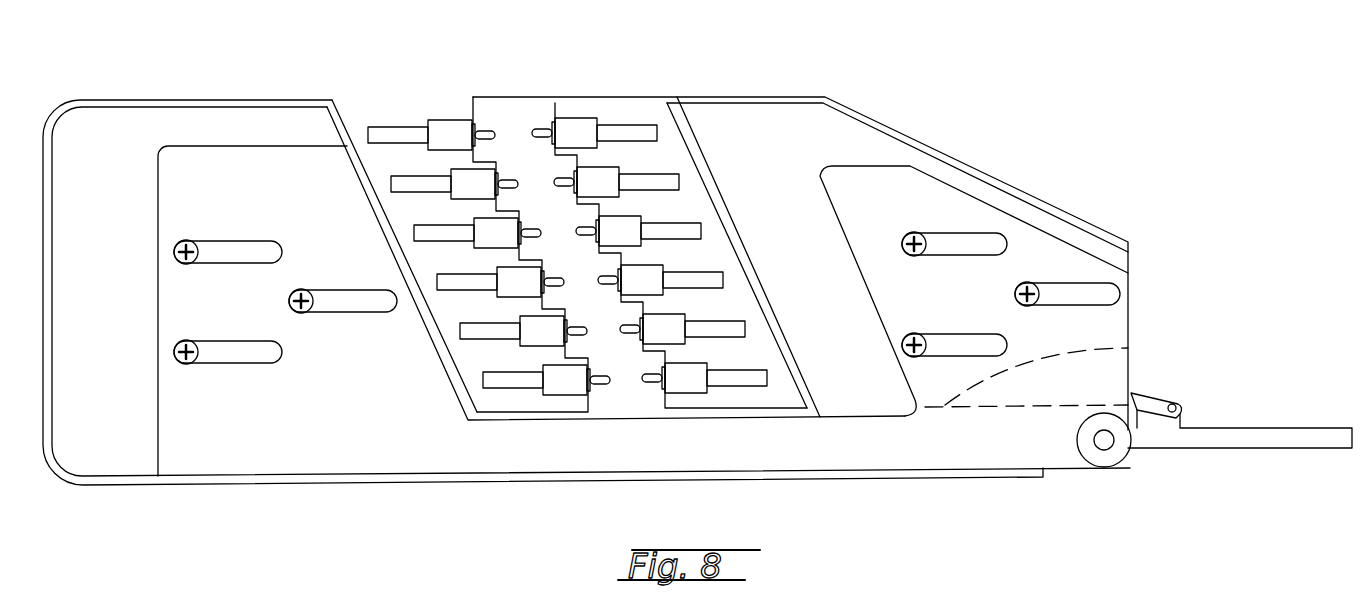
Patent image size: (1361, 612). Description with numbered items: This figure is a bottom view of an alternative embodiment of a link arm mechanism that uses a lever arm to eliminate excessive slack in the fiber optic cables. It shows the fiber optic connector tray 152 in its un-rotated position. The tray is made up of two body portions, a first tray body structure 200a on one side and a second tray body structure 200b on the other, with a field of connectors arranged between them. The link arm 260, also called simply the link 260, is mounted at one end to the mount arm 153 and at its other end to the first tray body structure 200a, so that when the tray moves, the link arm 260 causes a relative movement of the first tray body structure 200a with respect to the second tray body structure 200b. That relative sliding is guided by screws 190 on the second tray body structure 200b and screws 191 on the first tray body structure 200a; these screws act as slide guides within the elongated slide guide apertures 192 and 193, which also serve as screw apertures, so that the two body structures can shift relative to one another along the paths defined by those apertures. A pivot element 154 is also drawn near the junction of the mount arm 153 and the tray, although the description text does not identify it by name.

The fiber optic connector tray 152 is at (690, 78).
The mount arm 153 is at (1267, 438).
The hinge pivot 154 is at (1104, 448).
The screws 190 is at (180, 263).
The screws 191 is at (903, 256).
The slide guide apertures 192 is at (253, 250).
The slide guide apertures 193 is at (983, 243).
The first tray body structure 200a is at (842, 72).
The second tray body structure 200b is at (290, 97).
The link arm 260 is at (1150, 393).